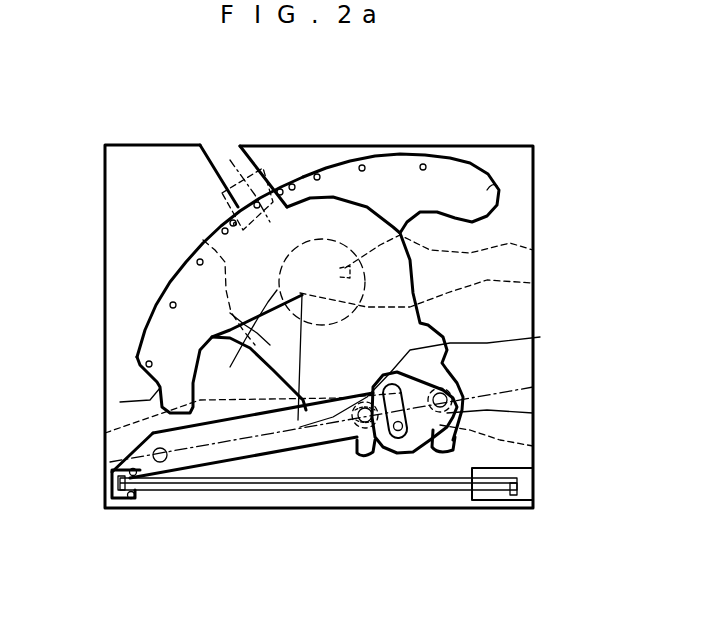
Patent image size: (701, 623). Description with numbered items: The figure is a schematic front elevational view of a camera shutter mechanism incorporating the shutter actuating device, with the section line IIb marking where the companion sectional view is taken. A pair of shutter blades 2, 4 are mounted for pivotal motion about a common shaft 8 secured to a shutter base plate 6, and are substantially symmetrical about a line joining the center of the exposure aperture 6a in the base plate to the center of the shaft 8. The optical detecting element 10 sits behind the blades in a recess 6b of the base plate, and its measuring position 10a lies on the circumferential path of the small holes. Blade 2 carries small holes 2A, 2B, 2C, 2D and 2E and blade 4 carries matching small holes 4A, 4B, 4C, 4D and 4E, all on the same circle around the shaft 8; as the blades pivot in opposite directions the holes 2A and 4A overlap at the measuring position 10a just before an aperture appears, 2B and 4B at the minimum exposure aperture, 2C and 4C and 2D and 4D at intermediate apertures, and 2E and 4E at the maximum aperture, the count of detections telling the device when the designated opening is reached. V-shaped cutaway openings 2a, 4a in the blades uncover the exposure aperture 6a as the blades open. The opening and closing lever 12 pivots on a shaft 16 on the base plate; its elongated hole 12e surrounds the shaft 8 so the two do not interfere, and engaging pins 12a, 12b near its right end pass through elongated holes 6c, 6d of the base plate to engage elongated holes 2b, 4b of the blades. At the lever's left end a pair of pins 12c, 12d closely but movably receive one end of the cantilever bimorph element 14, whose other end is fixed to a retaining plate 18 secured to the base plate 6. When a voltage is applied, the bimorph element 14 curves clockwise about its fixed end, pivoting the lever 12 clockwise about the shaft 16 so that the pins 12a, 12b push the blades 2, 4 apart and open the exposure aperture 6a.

The shutter blade 2 is at (137, 378).
The small hole 2A is at (230, 213).
The small hole 2B is at (222, 226).
The small hole 2C is at (197, 260).
The small hole 2D is at (170, 303).
The small hole 2E is at (146, 362).
The V-shaped cutaway opening 2a is at (120, 402).
The elongated hole 2b is at (533, 446).
The shutter blade 4 is at (500, 187).
The small hole 4A is at (281, 189).
The small hole 4B is at (294, 184).
The small hole 4C is at (319, 175).
The small hole 4D is at (363, 166).
The small hole 4E is at (424, 165).
The V-shaped cutaway opening 4a is at (533, 250).
The elongated hole 4b is at (357, 452).
The shutter base plate 6 is at (253, 498).
The exposure aperture 6a is at (533, 283).
The recess 6b is at (233, 219).
The elongated hole 6c is at (447, 455).
The elongated hole 6d is at (374, 456).
The common shaft 8 is at (432, 412).
The optical detecting element 10 is at (257, 200).
The measuring position 10a is at (230, 160).
The opening and closing lever 12 is at (247, 447).
The engaging pin 12a is at (533, 413).
The engaging pin 12b is at (105, 433).
The pin 12c is at (112, 485).
The pin 12d is at (131, 500).
The elongated hole 12e is at (540, 337).
The bimorph element 14 is at (327, 493).
The shaft 16 is at (163, 462).
The retaining plate 18 is at (527, 487).
The section line IIb is at (550, 379).